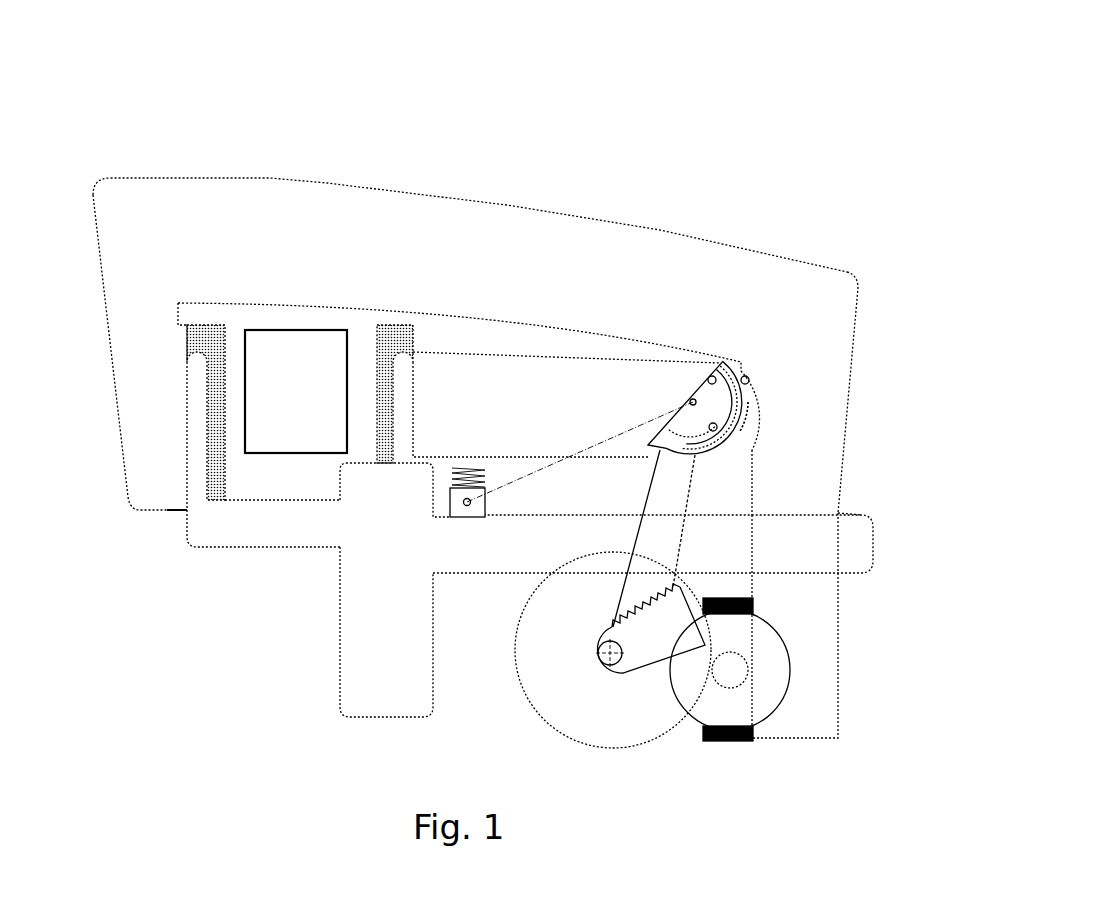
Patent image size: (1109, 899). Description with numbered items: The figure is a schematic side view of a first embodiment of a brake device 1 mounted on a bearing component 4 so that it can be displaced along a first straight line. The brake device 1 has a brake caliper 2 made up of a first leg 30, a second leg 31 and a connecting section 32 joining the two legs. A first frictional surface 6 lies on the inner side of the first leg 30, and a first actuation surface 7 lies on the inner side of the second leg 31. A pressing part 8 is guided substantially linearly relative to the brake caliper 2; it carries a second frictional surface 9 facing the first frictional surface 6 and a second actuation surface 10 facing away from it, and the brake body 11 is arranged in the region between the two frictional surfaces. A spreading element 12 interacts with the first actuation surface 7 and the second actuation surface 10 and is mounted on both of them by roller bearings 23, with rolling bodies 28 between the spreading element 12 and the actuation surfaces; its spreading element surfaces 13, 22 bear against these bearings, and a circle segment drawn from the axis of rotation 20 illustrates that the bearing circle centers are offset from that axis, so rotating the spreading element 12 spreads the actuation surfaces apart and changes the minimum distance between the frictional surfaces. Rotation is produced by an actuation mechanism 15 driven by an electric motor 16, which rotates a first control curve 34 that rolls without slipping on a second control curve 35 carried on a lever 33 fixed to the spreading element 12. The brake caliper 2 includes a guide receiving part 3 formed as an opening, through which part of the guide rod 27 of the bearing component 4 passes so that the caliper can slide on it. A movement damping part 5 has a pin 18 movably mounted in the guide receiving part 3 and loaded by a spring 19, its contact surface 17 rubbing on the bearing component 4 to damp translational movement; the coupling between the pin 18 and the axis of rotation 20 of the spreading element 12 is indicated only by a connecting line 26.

The brake device 1 is at (710, 88).
The brake caliper 2 is at (330, 192).
The guide receiving part 3 is at (823, 577).
The bearing component 4 is at (348, 663).
The movement damping part 5 is at (470, 530).
The first frictional surface 6 is at (244, 463).
The first actuation surface 7 is at (736, 389).
The pressing part 8 is at (517, 365).
The second frictional surface 9 is at (363, 348).
The second actuation surface 10 is at (714, 440).
The brake body 11 is at (302, 330).
The spreading element 12 is at (738, 410).
The spreading element surface 13 is at (710, 396).
The actuation mechanism 15 is at (593, 688).
The electric motor 16 is at (752, 708).
The contact surface 17 is at (453, 529).
The pin 18 is at (452, 502).
The spring 19 is at (453, 477).
The axis of rotation 20 is at (714, 416).
The spreading element surface 22 is at (755, 438).
The roller bearing 23 is at (750, 427).
The rolling body 28 is at (750, 427).
The connecting line 26 is at (607, 433).
The guide rod 27 is at (780, 552).
The first leg 30 is at (128, 385).
The second leg 31 is at (813, 422).
The connecting section 32 is at (207, 192).
The lever 33 is at (695, 497).
The first control curve 34 is at (645, 620).
The second control curve 35 is at (653, 597).